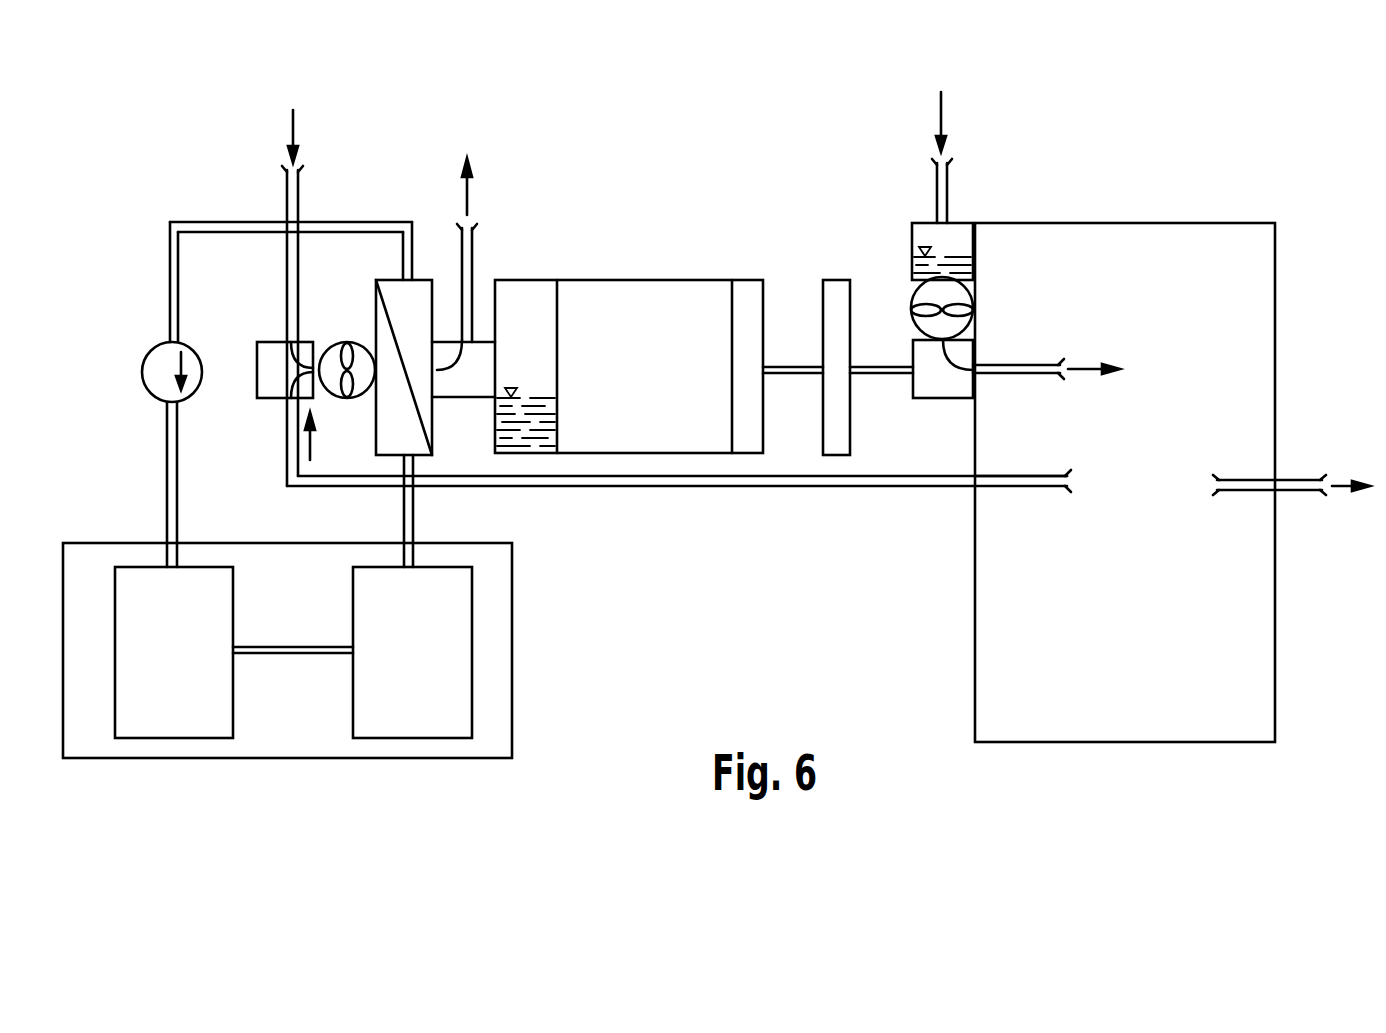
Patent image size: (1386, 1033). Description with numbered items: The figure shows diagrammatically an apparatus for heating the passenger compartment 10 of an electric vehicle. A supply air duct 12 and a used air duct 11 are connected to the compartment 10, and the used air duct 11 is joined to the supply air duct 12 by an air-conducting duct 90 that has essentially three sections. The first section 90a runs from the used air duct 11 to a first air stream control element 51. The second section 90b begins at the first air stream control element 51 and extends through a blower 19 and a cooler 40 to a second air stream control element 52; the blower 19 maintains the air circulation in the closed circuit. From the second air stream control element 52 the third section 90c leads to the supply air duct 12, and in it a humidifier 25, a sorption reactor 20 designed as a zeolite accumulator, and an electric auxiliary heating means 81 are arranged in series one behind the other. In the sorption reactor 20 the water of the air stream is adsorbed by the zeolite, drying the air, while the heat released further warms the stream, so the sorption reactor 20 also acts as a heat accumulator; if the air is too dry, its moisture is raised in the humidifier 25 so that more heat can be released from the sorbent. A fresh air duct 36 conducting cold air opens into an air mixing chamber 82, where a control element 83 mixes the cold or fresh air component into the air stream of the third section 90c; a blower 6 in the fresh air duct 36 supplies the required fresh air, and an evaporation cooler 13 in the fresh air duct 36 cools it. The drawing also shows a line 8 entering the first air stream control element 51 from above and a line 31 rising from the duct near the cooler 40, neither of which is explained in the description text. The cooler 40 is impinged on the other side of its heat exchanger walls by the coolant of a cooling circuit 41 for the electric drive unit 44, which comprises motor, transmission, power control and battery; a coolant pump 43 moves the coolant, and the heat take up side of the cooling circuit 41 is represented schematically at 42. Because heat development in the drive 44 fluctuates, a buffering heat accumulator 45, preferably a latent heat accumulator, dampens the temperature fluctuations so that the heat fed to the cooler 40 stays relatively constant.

The blower 6 is at (922, 307).
The feed line 8 is at (288, 193).
The compartment 10 is at (1113, 449).
The used air duct 11 is at (1022, 487).
The supply air duct 12 is at (1012, 364).
The evaporation cooler 13 is at (922, 230).
The blower 19 is at (343, 345).
The sorption reactor 20 is at (643, 292).
The humidifier 25 is at (532, 290).
The vent line 31 is at (472, 247).
The fresh air duct 36 is at (950, 183).
The cooler 40 is at (420, 290).
The cooling circuit 41 is at (150, 488).
The heat take up side 42 is at (500, 700).
The coolant pump 43 is at (153, 390).
The electric drive unit 44 is at (172, 717).
The heat accumulator 45 is at (412, 717).
The first air stream control element 51 is at (267, 394).
The second air stream control element 52 is at (463, 385).
The electric auxiliary heating means 81 is at (838, 292).
The air mixing chamber 82 is at (897, 337).
The control element 83 is at (945, 370).
The air-conducting duct 90 is at (820, 551).
The first section 90a is at (658, 487).
The second section 90b is at (363, 322).
The third section 90c is at (787, 345).